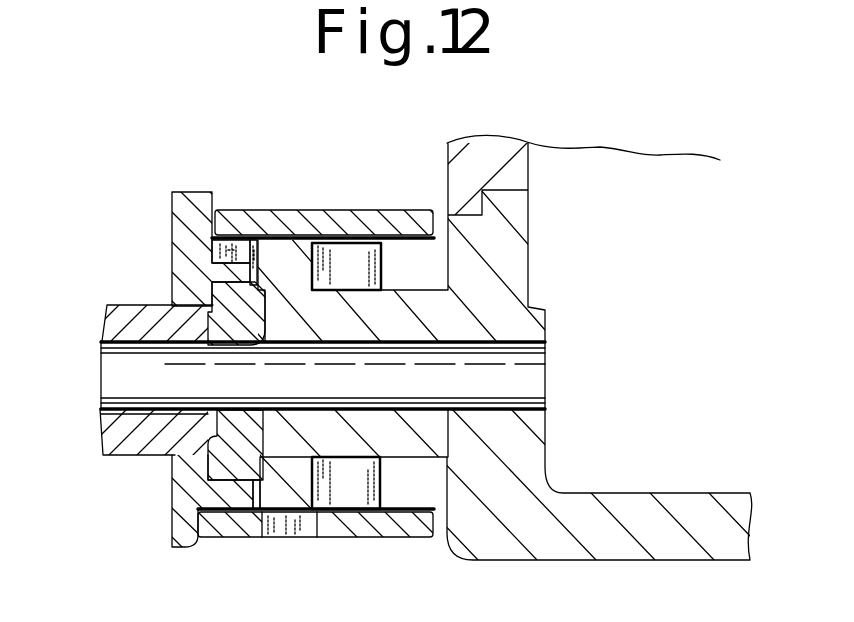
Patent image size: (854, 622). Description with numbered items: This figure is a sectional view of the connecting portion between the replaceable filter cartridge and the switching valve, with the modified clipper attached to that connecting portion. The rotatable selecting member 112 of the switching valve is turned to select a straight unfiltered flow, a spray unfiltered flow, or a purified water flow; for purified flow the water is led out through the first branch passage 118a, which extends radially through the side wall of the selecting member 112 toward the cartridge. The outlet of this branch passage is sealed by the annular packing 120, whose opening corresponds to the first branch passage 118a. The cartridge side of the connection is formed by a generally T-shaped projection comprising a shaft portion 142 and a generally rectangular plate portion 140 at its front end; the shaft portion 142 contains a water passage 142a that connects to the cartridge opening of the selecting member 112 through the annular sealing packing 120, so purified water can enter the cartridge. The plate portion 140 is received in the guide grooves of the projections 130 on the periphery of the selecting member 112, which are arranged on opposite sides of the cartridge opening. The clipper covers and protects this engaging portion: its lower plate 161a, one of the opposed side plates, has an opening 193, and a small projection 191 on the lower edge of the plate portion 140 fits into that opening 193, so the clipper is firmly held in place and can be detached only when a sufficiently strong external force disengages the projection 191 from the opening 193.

The selecting member 112 is at (188, 279).
The first branch passage 118a is at (131, 406).
The annular packing 120 is at (233, 318).
The projection 130 is at (350, 262).
The plate portion 140 is at (282, 262).
The shaft portion 142 is at (405, 433).
The water passage 142a is at (398, 378).
The lower plate 161a is at (272, 222).
The small projection 191 is at (290, 528).
The opening 193 is at (270, 528).